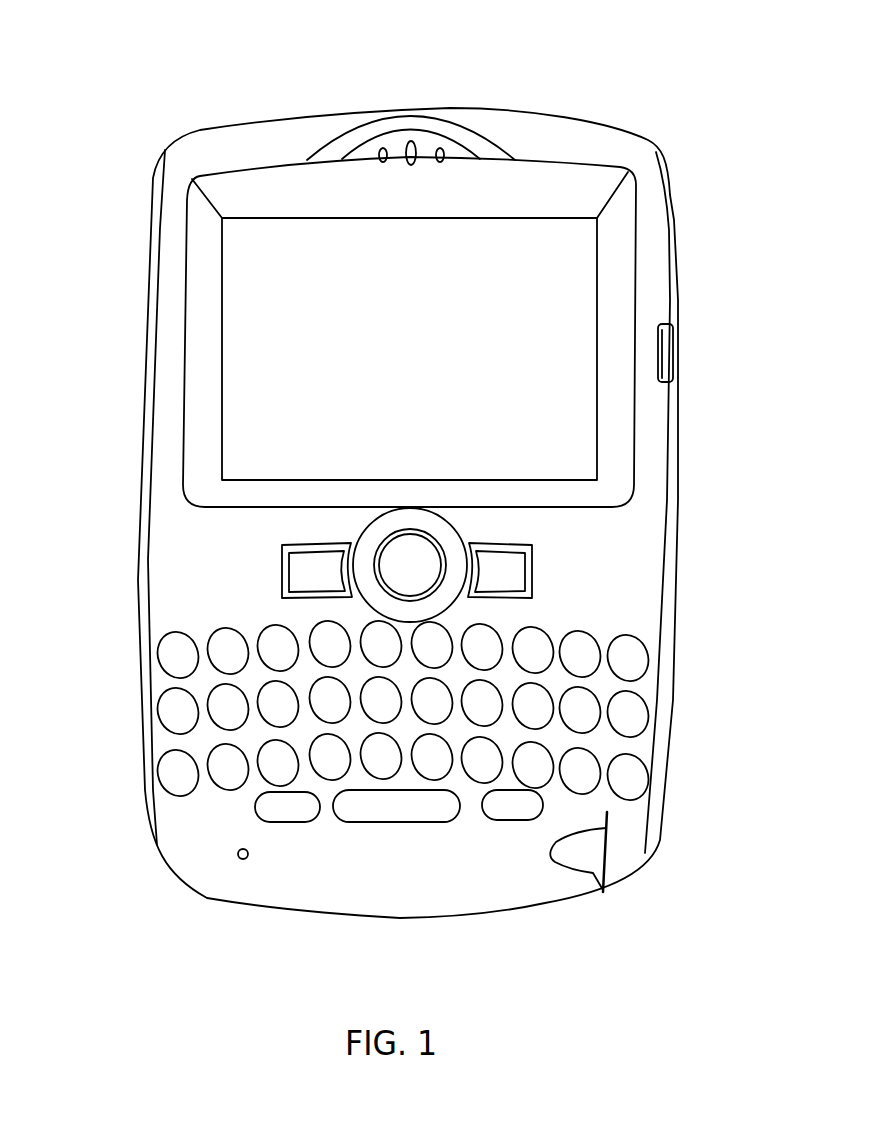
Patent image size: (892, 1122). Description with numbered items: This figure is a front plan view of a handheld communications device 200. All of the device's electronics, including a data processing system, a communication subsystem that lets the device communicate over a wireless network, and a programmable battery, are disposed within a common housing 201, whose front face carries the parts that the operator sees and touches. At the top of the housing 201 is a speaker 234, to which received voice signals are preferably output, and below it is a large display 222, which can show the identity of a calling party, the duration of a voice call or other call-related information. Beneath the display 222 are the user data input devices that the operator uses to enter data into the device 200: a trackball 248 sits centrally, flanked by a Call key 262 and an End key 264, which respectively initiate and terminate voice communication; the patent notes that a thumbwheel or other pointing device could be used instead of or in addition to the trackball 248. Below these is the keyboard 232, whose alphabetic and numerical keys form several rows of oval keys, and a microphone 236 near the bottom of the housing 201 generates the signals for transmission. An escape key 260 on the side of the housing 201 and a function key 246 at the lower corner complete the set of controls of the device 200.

The handheld communications device 200 is at (416, 503).
The housing 201 is at (272, 118).
The display 222 is at (596, 437).
The speaker 234 is at (411, 166).
The escape key 260 is at (677, 345).
The trackball 248 is at (420, 553).
The Call key 262 is at (292, 575).
The End key 264 is at (515, 580).
The keyboard 232 is at (708, 632).
The microphone 236 is at (243, 866).
The function key 246 is at (565, 882).